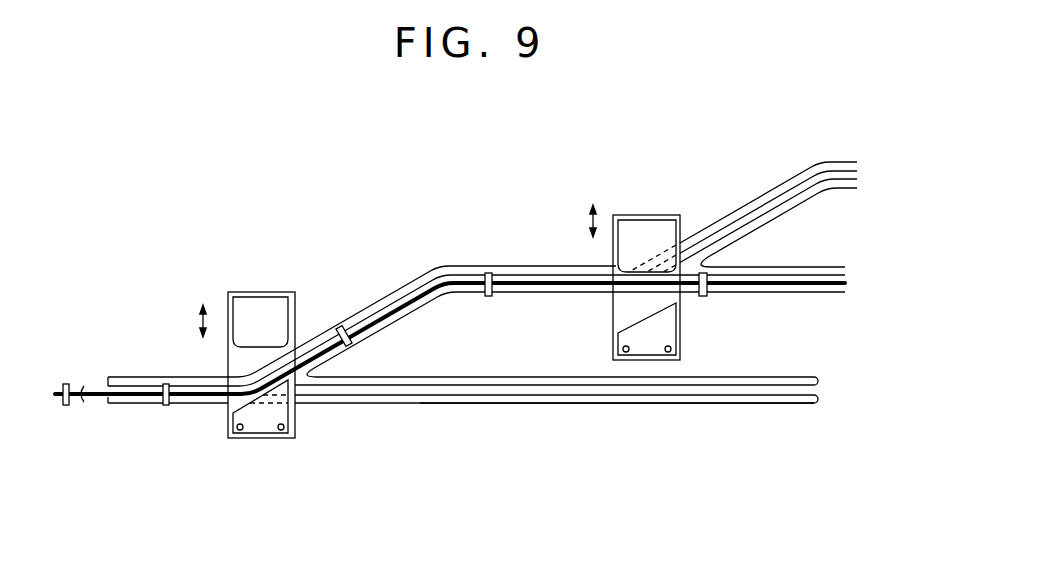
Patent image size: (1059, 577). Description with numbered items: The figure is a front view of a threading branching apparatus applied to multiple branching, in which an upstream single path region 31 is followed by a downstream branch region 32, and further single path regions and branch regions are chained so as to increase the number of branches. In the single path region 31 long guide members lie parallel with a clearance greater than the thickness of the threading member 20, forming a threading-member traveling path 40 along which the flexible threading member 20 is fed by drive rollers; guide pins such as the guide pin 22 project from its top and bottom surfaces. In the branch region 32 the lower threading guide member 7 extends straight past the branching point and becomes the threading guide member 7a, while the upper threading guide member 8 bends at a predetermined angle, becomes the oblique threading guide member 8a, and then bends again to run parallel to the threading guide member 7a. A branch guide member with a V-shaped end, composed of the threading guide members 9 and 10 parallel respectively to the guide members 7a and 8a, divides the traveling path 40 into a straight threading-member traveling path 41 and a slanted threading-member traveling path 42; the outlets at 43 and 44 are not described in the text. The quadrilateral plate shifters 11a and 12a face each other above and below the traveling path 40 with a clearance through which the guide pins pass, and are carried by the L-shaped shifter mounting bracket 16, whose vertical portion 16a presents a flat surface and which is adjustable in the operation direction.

The lower threading guide member 7 is at (192, 398).
The threading guide member 7a is at (440, 398).
The upper threading guide member 8 is at (192, 388).
The threading guide member 8a is at (382, 303).
The threading guide member 9 is at (383, 374).
The threading guide member 10 is at (390, 317).
The shifter 11a is at (253, 312).
The shifter 12a is at (263, 423).
The shifter mounting bracket 16 is at (235, 438).
The vertical portion 16a is at (275, 292).
The threading member 20 is at (99, 399).
The guide pin 22 is at (65, 405).
The single path region 31 is at (133, 362).
The branch region 32 is at (708, 204).
The threading-member traveling path 40 is at (50, 369).
The straight threading-member traveling path 41 is at (830, 398).
The slanted threading-member traveling path 42 is at (454, 260).
The tube outlet 43 is at (857, 283).
The upper tube outlet 44 is at (868, 172).